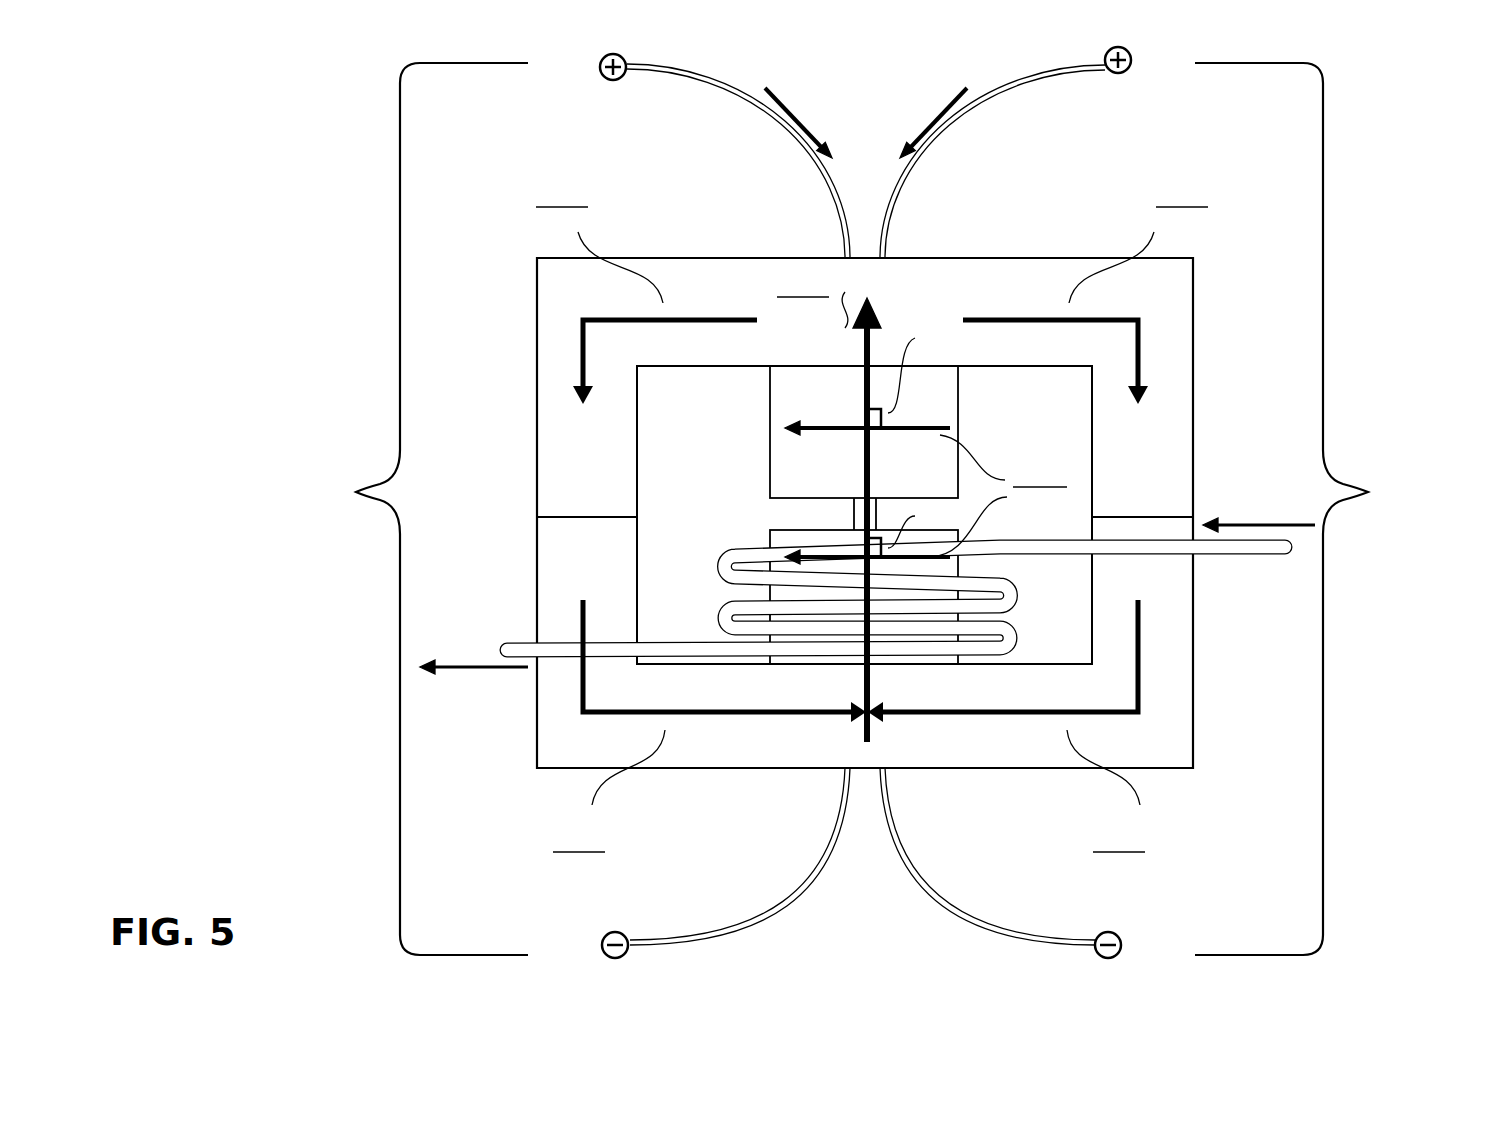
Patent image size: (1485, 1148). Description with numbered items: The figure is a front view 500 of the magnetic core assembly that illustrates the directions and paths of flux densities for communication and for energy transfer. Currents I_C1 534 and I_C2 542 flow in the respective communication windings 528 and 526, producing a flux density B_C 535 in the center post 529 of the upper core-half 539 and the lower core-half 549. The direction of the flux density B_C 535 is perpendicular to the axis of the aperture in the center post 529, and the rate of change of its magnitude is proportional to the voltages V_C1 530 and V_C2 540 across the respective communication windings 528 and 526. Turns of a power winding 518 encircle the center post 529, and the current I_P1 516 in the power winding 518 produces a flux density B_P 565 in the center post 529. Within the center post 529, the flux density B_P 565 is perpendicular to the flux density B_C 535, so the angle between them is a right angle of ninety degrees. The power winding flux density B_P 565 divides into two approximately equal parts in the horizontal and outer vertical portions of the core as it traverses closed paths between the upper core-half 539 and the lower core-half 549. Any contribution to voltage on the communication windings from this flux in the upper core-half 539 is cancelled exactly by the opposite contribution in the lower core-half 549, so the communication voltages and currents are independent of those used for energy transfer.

The front view 500 is at (272, 199).
The current I_P1 516 is at (505, 675).
The power winding 518 is at (527, 640).
The communication winding 526 is at (1020, 97).
The communication winding 528 is at (710, 97).
The center post 529 is at (965, 410).
The voltage V_C1 530 is at (320, 472).
The current I_C1 534 is at (787, 107).
The flux density B_C 535 is at (822, 434).
The upper core-half 539 is at (1195, 330).
The voltage V_C2 540 is at (1412, 472).
The current I_C2 542 is at (940, 107).
The lower core-half 549 is at (1195, 700).
The flux density B_P 565 is at (878, 468).